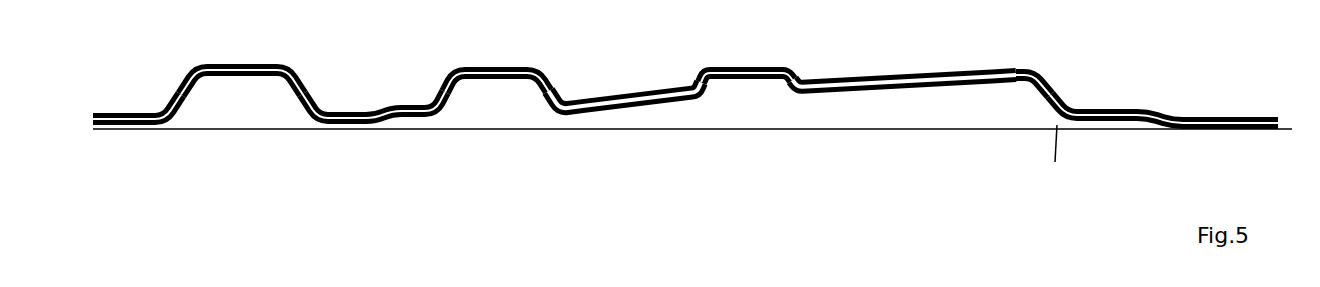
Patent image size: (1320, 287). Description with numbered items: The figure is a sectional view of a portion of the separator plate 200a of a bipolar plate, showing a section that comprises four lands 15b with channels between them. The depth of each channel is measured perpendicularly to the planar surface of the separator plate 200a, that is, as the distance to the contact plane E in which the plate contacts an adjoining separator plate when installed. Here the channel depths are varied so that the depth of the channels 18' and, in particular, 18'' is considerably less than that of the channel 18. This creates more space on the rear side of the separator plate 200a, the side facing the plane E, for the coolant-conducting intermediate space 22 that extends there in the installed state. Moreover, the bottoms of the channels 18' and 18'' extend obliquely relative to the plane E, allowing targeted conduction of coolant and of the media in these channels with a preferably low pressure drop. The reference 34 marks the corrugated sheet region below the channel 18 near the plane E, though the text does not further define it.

The land 15b is at (236, 66).
The channel 18 is at (374, 92).
The channel 18' is at (625, 73).
The channel 18'' is at (905, 52).
The separator plate 200a is at (1190, 115).
The intermediate space 22 is at (765, 122).
The corrugated sheet 34 is at (350, 160).
The contact plane E is at (1055, 158).